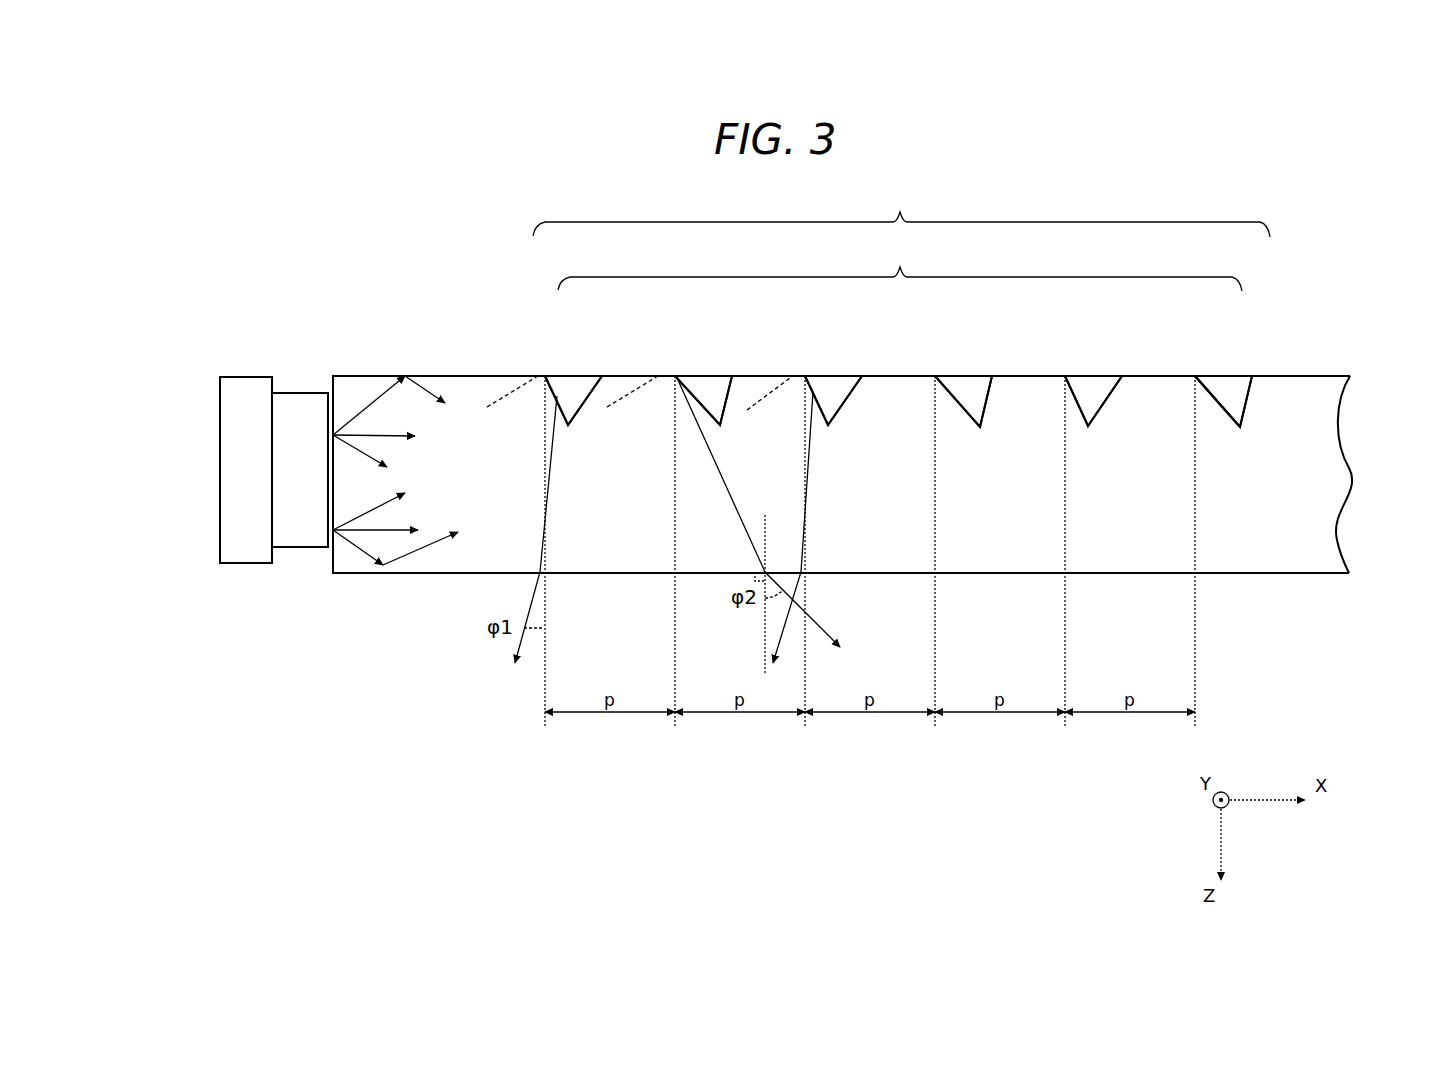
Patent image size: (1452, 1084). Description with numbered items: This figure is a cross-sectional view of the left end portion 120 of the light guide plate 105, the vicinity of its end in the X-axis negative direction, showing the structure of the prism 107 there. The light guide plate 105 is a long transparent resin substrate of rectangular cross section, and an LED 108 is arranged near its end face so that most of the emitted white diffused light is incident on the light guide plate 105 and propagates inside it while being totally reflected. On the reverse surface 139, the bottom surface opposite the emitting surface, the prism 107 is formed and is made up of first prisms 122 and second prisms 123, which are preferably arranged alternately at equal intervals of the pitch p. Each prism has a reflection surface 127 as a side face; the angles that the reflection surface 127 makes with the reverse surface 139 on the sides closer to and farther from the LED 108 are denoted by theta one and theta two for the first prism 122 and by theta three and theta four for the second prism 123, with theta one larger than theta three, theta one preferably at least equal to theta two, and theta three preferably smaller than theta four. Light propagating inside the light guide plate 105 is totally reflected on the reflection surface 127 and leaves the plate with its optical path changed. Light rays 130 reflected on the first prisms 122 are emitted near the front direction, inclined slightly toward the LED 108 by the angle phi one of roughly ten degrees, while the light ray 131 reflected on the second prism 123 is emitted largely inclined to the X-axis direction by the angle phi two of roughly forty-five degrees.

The light guide plate 105 is at (1323, 478).
The prism 107 is at (900, 264).
The LED 108 is at (237, 470).
The left end portion 120 is at (901, 304).
The first prism 122 is at (573, 390).
The second prism 123 is at (703, 387).
The reflection surface 127 is at (1233, 422).
The light rays 130 is at (655, 542).
The light ray 131 is at (778, 527).
The reverse surface 139 is at (1294, 378).